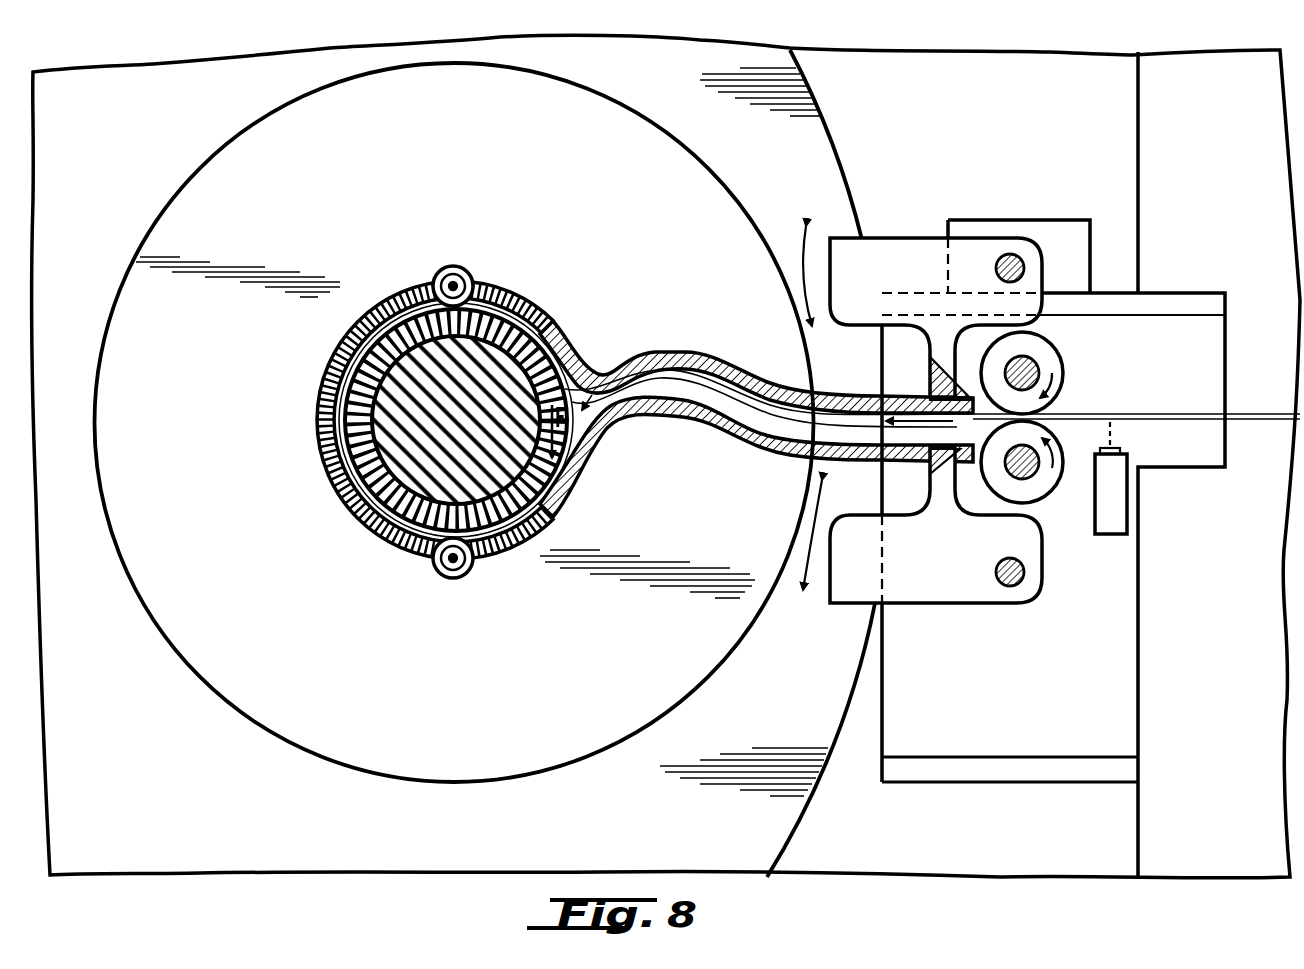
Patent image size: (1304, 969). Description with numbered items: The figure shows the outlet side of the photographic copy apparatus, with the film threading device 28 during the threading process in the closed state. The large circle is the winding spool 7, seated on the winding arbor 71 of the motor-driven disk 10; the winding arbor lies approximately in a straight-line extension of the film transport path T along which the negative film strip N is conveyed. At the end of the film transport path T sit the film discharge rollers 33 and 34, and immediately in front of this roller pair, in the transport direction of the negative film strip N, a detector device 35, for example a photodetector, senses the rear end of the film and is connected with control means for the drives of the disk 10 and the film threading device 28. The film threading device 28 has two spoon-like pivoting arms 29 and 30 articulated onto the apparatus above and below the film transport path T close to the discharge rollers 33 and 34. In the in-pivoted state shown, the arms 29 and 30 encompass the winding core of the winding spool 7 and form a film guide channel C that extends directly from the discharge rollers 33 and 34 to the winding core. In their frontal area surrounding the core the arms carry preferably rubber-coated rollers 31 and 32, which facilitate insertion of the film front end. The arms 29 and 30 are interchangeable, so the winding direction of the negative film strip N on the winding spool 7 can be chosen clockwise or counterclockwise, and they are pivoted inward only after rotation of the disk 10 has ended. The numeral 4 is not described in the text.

The cassette housing 4 is at (160, 882).
The winding spool 7 is at (262, 705).
The disk 10 is at (768, 840).
The film threading device 28 is at (1184, 672).
The spoon like pivoting arm 29 is at (660, 352).
The spoon like pivoting arm 30 is at (744, 434).
The rubber coated roller 31 is at (463, 270).
The rubber coated roller 32 is at (466, 578).
The film discharge roller 33 is at (1046, 352).
The film discharge roller 34 is at (1046, 488).
The detector device 35 is at (1110, 500).
The winding arbor 71 is at (416, 470).
The film transport path T is at (1164, 412).
The negative film strip N is at (1260, 414).
The film guide channel C is at (688, 398).